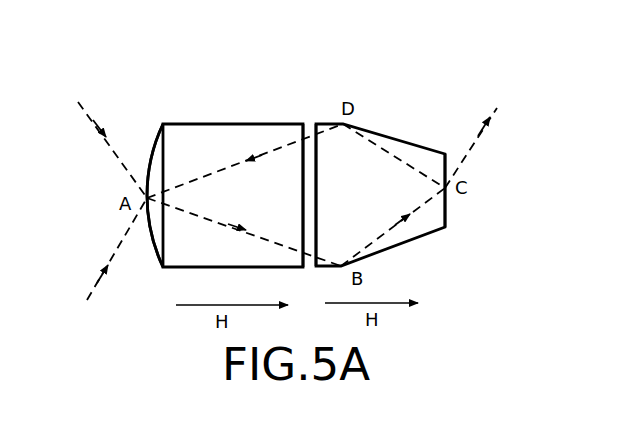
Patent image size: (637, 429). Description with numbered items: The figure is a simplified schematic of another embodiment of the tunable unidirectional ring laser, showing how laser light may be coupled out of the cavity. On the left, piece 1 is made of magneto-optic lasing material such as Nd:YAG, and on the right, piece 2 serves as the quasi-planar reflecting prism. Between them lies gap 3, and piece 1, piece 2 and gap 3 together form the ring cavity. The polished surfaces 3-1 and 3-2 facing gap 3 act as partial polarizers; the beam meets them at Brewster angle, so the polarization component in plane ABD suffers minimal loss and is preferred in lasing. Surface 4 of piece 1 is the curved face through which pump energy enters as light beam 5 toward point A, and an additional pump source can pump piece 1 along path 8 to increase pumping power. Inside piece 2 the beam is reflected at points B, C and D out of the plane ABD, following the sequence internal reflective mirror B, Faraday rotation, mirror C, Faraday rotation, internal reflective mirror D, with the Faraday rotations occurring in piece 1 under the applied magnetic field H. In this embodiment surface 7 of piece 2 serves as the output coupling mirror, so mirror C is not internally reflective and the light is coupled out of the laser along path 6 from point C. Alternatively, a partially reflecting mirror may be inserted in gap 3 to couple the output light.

The piece 1 is at (211, 150).
The piece 2 is at (367, 158).
The gap 3 is at (306, 140).
The surface 3-1 is at (302, 212).
The surface 3-2 is at (334, 218).
The surface 4 is at (152, 138).
The light beam 5 is at (107, 137).
The line 6 is at (477, 136).
The surface 7 is at (447, 212).
The path 8 is at (108, 266).